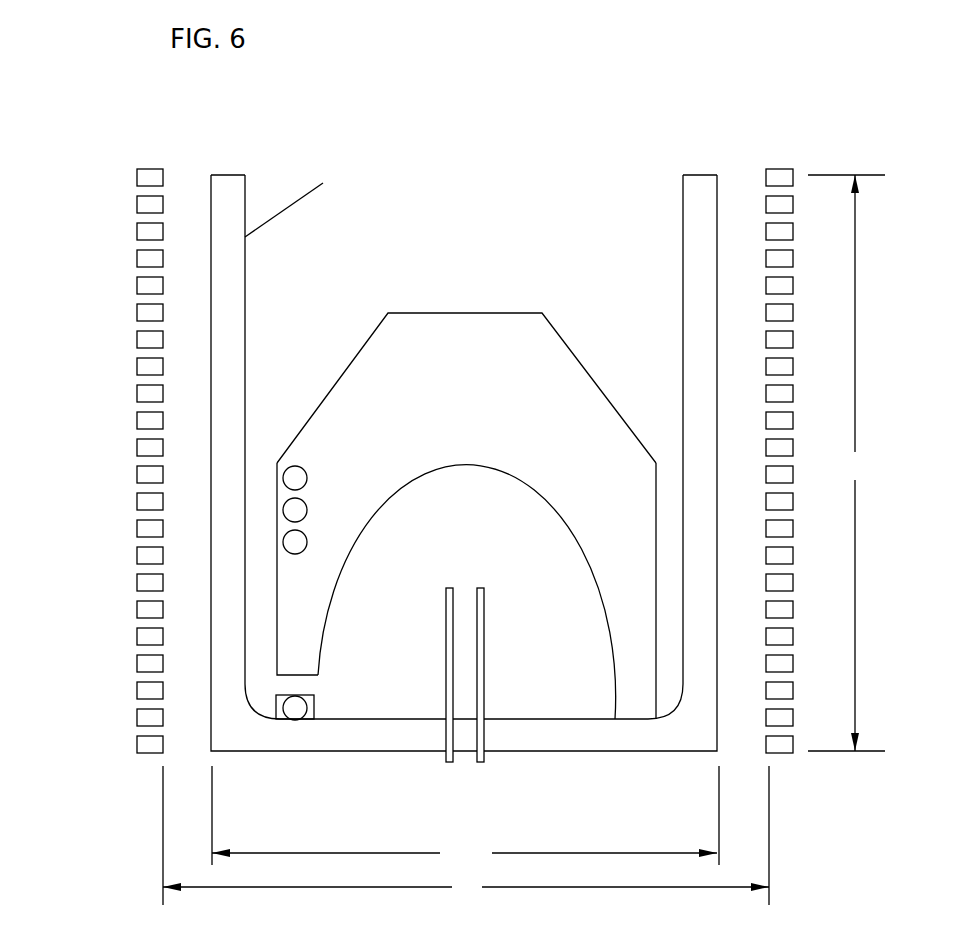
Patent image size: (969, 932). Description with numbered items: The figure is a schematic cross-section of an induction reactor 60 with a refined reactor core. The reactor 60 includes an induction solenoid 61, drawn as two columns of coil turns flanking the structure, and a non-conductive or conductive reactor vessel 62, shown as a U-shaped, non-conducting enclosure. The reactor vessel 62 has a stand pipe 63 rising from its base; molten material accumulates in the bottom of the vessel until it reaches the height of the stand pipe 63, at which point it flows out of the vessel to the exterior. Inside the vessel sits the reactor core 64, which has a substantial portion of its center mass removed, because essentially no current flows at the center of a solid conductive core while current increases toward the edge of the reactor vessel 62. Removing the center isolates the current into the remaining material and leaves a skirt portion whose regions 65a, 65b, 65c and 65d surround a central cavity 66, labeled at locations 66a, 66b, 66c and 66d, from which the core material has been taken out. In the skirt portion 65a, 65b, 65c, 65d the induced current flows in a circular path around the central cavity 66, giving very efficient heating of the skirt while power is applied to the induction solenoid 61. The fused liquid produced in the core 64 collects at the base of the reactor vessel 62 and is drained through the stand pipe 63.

The reactor 60 is at (120, 653).
The induction solenoid 61 is at (137, 744).
The reactor vessel 62 is at (695, 729).
The stand pipe 63 is at (461, 737).
The reactor core 64 is at (511, 416).
The skirt portion 65a is at (637, 484).
The skirt portion 65b is at (637, 518).
The skirt portion 65c is at (637, 577).
The skirt portion 65d is at (637, 679).
The central cavity 66 is at (478, 547).
The central cavity 66a is at (312, 484).
The central cavity 66b is at (312, 521).
The central cavity 66c is at (311, 602).
The central cavity 66d is at (313, 707).